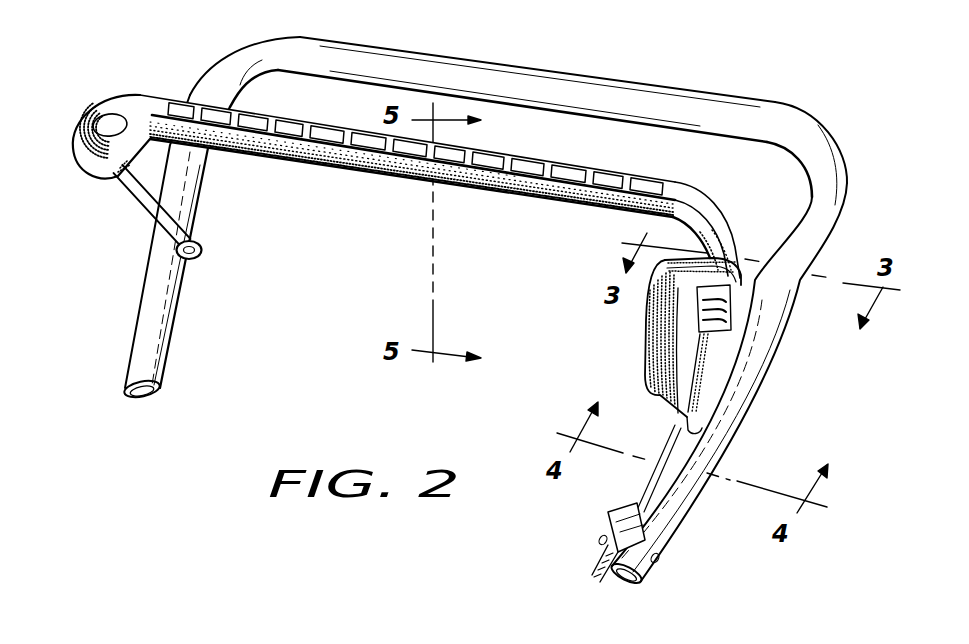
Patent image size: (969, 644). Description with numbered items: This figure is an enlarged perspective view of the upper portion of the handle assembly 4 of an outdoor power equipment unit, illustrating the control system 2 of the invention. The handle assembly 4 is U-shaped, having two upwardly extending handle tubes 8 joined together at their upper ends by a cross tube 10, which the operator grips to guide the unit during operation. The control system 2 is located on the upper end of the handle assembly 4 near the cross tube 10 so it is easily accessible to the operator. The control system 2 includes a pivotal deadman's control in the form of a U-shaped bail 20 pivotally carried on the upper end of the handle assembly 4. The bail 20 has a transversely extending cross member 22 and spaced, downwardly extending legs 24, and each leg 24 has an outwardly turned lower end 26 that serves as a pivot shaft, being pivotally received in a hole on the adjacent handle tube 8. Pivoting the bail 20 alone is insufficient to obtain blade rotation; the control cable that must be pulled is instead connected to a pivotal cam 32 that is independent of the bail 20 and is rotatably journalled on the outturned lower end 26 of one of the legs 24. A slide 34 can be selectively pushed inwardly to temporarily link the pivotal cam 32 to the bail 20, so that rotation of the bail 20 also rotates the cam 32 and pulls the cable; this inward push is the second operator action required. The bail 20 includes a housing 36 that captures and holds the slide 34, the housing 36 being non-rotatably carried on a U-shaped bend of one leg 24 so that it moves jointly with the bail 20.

The control system 2 is at (360, 232).
The handle assembly 4 is at (456, 312).
The handle tubes 8 is at (135, 318).
The cross tube 10 is at (545, 71).
The bail 20 is at (130, 94).
The cross member 22 is at (401, 160).
The legs 24 is at (125, 214).
The outwardly turned lower end 26 is at (170, 245).
The pivotal cam 32 is at (684, 381).
The slide 34 is at (720, 300).
The housing 36 is at (700, 346).